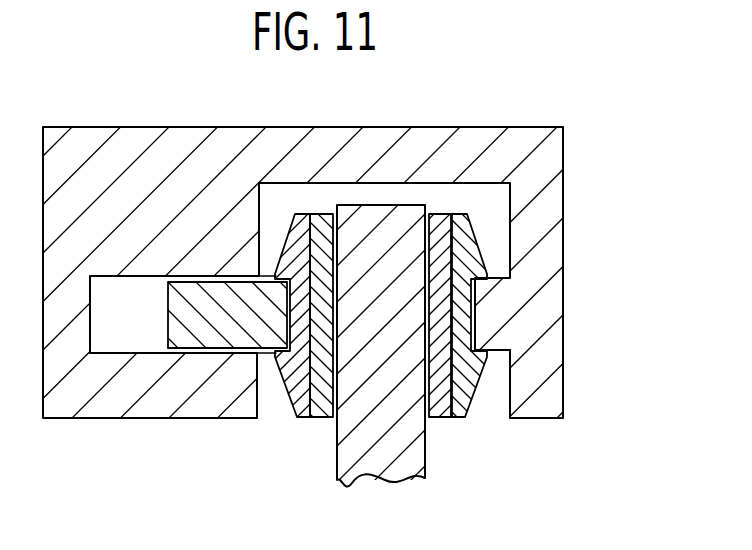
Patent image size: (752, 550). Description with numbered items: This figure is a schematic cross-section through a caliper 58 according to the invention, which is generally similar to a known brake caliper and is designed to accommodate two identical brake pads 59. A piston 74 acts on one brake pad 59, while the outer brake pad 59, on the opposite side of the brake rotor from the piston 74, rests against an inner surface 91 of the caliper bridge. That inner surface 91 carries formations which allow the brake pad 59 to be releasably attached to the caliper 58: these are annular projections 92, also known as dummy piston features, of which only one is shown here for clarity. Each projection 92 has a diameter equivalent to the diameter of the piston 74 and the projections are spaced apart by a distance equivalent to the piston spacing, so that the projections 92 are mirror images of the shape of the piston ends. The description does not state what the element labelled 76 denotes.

The caliper 58 is at (569, 140).
The brake pad 59 is at (305, 418).
The piston 74 is at (217, 327).
The wedge seal 76 is at (286, 378).
The inner surface of the caliper bridge 91 is at (503, 391).
The annular projection 92 is at (486, 314).